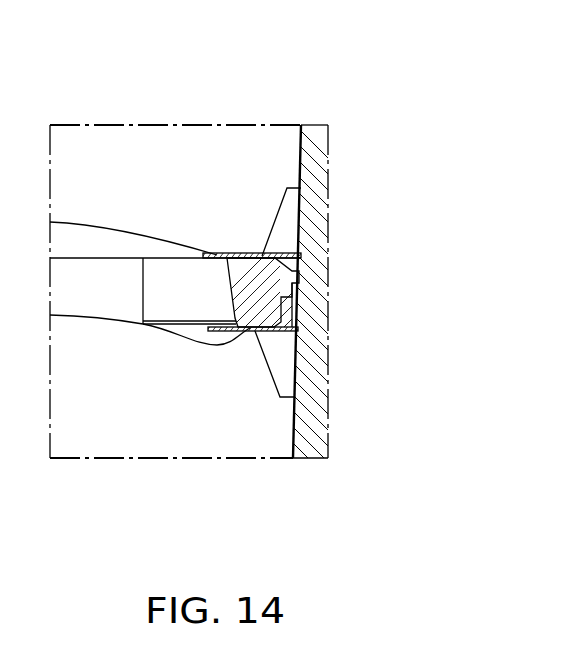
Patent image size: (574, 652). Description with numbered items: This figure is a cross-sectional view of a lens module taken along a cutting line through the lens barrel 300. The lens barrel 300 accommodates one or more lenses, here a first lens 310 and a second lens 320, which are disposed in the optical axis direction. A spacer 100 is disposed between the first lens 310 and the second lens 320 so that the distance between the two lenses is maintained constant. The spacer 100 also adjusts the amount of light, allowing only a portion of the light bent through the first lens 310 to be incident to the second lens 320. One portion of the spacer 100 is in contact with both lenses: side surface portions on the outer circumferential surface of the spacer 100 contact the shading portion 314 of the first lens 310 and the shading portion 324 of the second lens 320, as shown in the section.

The first lens 310 is at (209, 86).
The second lens 320 is at (209, 498).
The shading portion 314 is at (275, 160).
The shading portion 324 is at (275, 431).
The lens barrel 300 is at (318, 223).
The spacer 100 is at (273, 284).